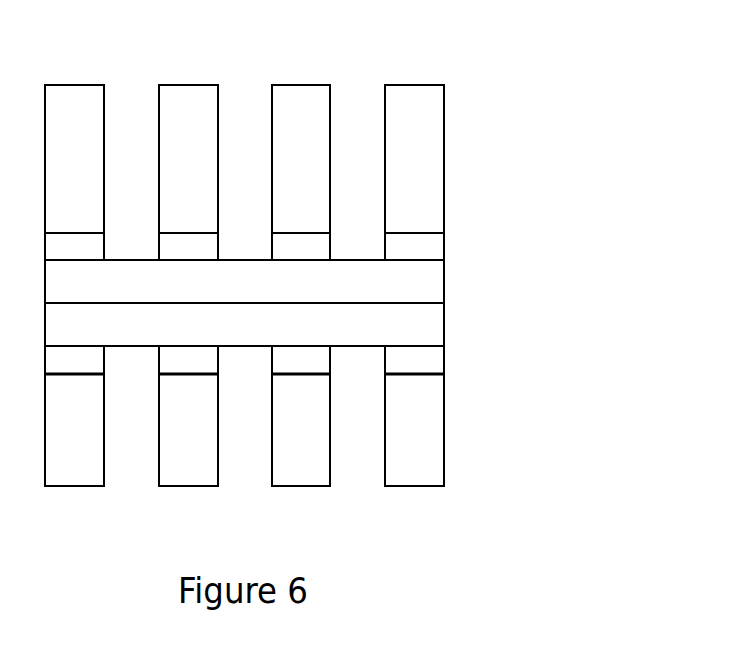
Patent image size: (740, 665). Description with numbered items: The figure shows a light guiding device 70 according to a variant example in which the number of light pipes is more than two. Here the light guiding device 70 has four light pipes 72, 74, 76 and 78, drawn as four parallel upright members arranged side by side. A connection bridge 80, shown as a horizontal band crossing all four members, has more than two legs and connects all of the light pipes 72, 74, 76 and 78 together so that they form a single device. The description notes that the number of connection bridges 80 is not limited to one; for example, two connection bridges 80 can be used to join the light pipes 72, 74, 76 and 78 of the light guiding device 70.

The light guiding device 70 is at (507, 67).
The light pipe 72 is at (75, 476).
The light pipe 74 is at (188, 476).
The light pipe 76 is at (302, 476).
The light pipe 78 is at (415, 476).
The connection bridge 80 is at (462, 260).